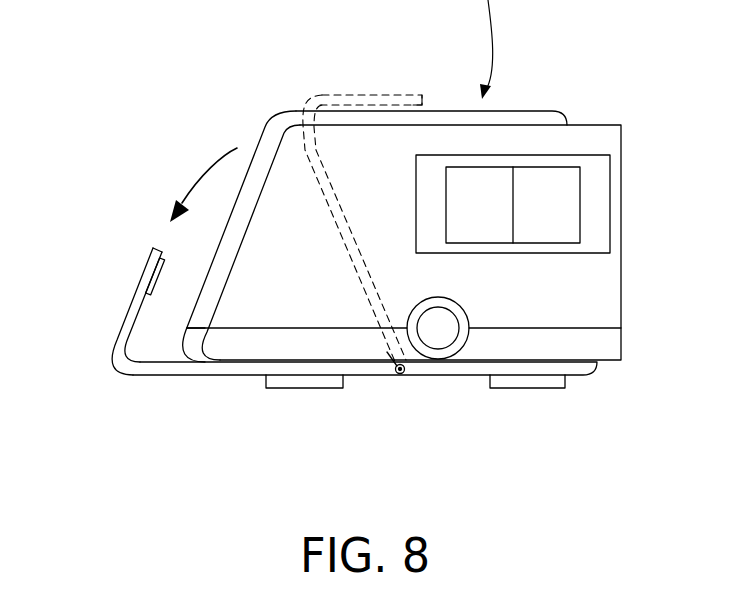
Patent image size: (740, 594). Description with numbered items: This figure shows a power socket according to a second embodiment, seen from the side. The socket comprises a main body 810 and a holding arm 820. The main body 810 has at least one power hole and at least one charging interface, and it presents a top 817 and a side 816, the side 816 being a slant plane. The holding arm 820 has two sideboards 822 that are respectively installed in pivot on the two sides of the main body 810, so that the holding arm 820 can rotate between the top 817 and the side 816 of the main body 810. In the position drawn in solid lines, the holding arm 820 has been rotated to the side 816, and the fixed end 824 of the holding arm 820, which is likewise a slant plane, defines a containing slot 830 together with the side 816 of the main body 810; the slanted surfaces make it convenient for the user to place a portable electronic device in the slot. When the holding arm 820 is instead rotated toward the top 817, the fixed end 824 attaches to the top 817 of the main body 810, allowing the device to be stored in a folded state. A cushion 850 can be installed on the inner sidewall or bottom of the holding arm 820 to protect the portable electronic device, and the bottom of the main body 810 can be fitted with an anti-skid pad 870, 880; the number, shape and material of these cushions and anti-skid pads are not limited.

The main body 810 is at (538, 145).
The side 816 is at (262, 146).
The top 817 is at (444, 114).
The holding arm 820 is at (368, 103).
The sideboards 822 is at (167, 372).
The fixed end 824 is at (150, 257).
The containing slot 830 is at (172, 310).
The cushion 850 is at (148, 272).
The anti-skid pad 870 is at (310, 381).
The anti-skid pad 880 is at (527, 379).